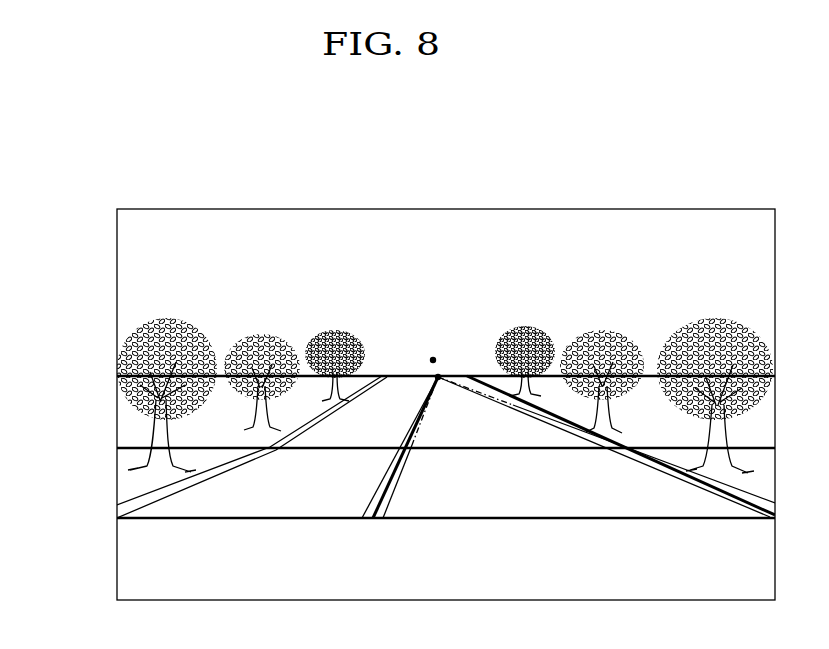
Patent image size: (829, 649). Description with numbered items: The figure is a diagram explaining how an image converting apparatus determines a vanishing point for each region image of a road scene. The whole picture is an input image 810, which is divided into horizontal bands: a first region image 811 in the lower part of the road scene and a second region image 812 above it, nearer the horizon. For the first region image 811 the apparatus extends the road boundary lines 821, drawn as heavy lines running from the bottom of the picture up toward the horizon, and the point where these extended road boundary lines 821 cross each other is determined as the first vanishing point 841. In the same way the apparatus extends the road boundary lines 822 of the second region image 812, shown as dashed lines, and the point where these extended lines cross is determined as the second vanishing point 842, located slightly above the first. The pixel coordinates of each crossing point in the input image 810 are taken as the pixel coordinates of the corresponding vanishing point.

The input image 810 is at (650, 209).
The first region image 811 is at (88, 478).
The second region image 812 is at (88, 411).
The road boundary lines of the first region image 821 is at (640, 454).
The road boundary lines of the second region image 822 is at (513, 406).
The first vanishing point 841 is at (439, 376).
The second vanishing point 842 is at (432, 358).